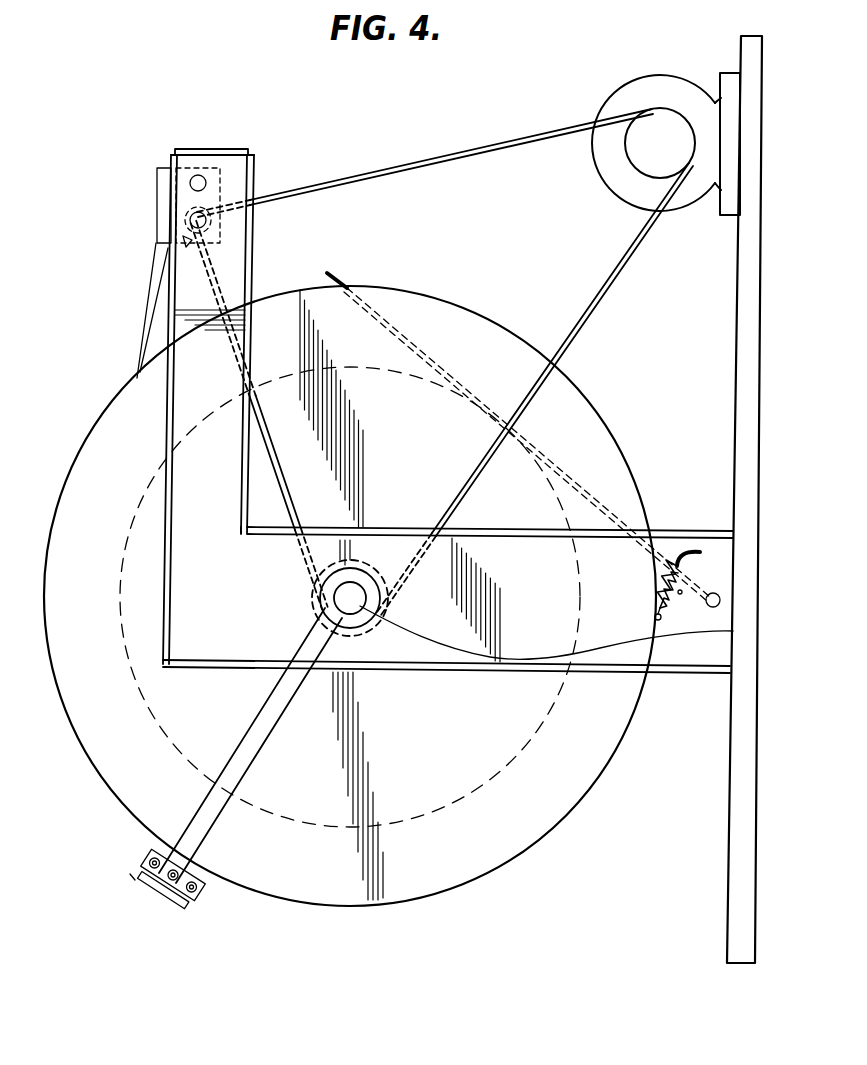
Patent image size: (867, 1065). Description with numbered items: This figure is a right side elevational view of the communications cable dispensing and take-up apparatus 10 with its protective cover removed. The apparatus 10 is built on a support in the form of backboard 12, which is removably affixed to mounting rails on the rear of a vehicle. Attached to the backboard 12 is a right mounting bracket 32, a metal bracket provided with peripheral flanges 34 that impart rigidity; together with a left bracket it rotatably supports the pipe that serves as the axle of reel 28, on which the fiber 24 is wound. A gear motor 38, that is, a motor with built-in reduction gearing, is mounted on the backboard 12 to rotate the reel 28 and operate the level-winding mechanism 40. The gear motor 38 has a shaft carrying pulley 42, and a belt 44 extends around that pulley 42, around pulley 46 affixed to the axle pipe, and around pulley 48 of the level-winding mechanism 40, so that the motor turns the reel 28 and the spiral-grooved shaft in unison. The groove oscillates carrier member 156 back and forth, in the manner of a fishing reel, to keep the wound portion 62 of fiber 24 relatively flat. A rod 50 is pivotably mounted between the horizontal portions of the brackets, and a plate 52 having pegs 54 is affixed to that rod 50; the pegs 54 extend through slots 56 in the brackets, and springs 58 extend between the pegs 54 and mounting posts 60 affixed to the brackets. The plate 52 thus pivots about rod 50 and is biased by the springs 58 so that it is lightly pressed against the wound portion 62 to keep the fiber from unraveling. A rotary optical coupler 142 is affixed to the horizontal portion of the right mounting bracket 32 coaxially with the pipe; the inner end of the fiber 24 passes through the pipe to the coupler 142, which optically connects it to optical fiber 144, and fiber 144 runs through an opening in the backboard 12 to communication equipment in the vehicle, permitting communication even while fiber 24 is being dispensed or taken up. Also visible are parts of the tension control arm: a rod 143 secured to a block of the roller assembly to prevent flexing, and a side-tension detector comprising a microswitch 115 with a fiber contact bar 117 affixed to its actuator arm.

The communications cable dispensing and take-up apparatus 10 is at (522, 82).
The backboard 12 is at (735, 322).
The fiber 24 is at (134, 880).
The reel 28 is at (560, 806).
The right mounting bracket 32 is at (197, 638).
The peripheral flanges 34 is at (216, 149).
The gear motor 38 is at (661, 76).
The level-winding mechanism 40 is at (276, 160).
The pulley 42 is at (674, 155).
The belt 44 is at (512, 148).
The pulley 46 is at (340, 560).
The pulley 48 is at (222, 239).
The rod 50 is at (713, 608).
The plate 52 is at (600, 448).
The pegs 54 is at (665, 574).
The slots 56 is at (702, 548).
The springs 58 is at (680, 595).
The mounting posts 60 is at (655, 618).
The wound portion 62 is at (445, 808).
The microswitch 115 is at (188, 865).
The fiber contact bar 117 is at (188, 906).
The rotary optical coupler 142 is at (357, 577).
The rod 143 is at (220, 813).
The optical fiber 144 is at (440, 638).
The carrier member 156 is at (157, 197).